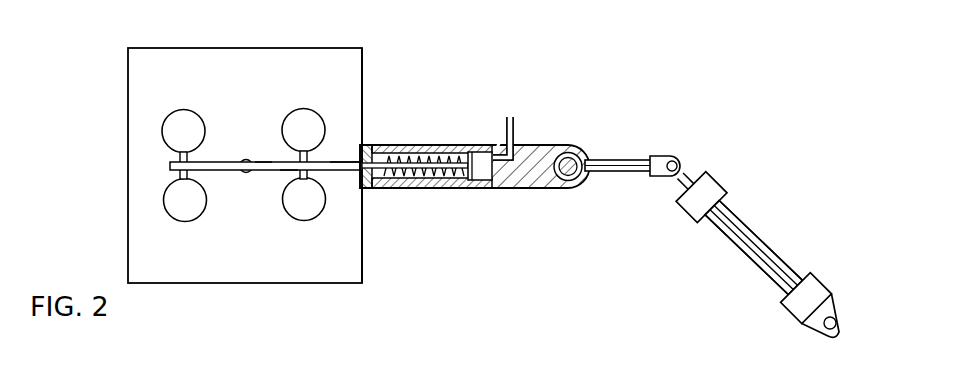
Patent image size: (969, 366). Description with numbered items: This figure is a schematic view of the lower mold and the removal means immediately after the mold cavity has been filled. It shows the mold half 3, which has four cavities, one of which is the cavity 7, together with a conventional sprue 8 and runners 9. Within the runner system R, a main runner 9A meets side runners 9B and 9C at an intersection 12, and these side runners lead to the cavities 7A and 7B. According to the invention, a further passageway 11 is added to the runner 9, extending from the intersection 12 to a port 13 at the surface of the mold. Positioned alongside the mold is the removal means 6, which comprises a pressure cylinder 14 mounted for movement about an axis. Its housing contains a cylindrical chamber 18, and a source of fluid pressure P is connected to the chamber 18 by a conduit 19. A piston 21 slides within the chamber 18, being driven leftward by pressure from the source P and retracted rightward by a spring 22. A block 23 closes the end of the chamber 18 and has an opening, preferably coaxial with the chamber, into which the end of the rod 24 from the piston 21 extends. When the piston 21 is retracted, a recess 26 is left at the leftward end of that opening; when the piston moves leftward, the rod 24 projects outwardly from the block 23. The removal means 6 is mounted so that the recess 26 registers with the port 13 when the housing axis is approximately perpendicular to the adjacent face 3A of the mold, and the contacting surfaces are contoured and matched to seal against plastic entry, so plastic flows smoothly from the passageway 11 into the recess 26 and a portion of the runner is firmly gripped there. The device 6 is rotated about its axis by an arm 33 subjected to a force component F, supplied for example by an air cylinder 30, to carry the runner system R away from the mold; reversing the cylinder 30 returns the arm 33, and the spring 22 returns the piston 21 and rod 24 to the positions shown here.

The mold half 3 is at (323, 53).
The adjacent face of the mold 3A is at (363, 62).
The cavity 7 is at (184, 121).
The cavity 7A is at (303, 122).
The cavity 7B is at (301, 214).
The sprue 8 is at (243, 156).
The runner system R is at (251, 149).
The runner 9 is at (213, 170).
The main runner 9A is at (263, 161).
The side runner 9B is at (338, 161).
The side runner 9C is at (295, 171).
The further passageway 11 is at (347, 160).
The intersection 12 is at (318, 173).
The port 13 is at (364, 178).
The recess 26 is at (365, 160).
The block 23 is at (390, 150).
The spring 22 is at (439, 155).
The rod 24 is at (447, 169).
The piston 21 is at (479, 181).
The cylindrical chamber 18 is at (514, 170).
The conduit 19 is at (518, 122).
The source of fluid pressure P is at (511, 110).
The removal means 6 is at (489, 136).
The pressure cylinder 14 is at (551, 143).
The arm 33 is at (618, 159).
The force component F is at (657, 184).
The air cylinder 30 is at (758, 228).